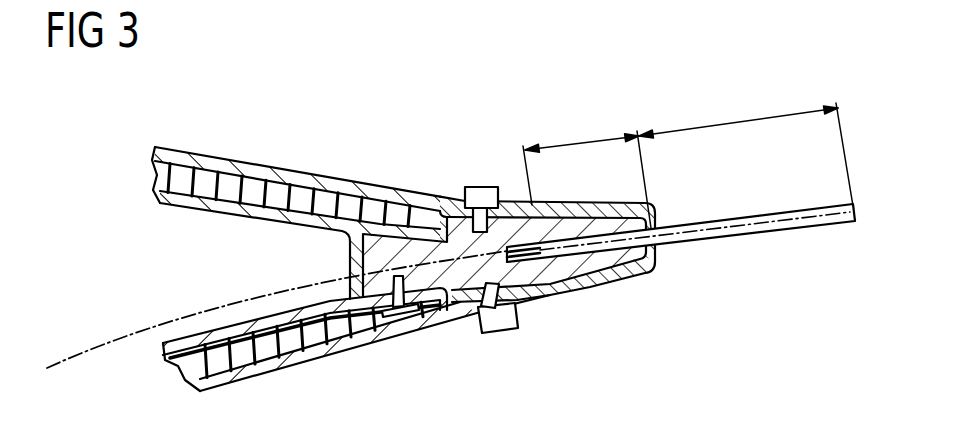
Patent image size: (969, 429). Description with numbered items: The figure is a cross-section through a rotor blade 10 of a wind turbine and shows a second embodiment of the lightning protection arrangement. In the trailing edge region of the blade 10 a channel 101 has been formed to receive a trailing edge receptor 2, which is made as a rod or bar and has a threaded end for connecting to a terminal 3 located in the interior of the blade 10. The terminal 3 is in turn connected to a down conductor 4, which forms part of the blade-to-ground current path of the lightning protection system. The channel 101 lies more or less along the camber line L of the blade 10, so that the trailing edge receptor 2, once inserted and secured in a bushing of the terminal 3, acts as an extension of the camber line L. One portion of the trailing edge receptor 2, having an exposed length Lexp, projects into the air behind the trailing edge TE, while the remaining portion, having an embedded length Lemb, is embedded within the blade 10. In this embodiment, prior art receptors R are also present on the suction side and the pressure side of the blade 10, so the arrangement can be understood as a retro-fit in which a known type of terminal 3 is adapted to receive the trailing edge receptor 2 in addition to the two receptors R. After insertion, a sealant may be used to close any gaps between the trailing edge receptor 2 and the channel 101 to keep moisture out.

The rotor blade 10 is at (230, 158).
The trailing edge receptor 2 is at (759, 215).
The terminal 3 is at (473, 320).
The down conductor 4 is at (357, 322).
The prior art receptors R is at (478, 186).
The channel 101 is at (596, 285).
The trailing edge TE is at (660, 253).
The camber line L is at (172, 316).
The embedded length Lemb is at (587, 138).
The exposed length Lexp is at (748, 118).